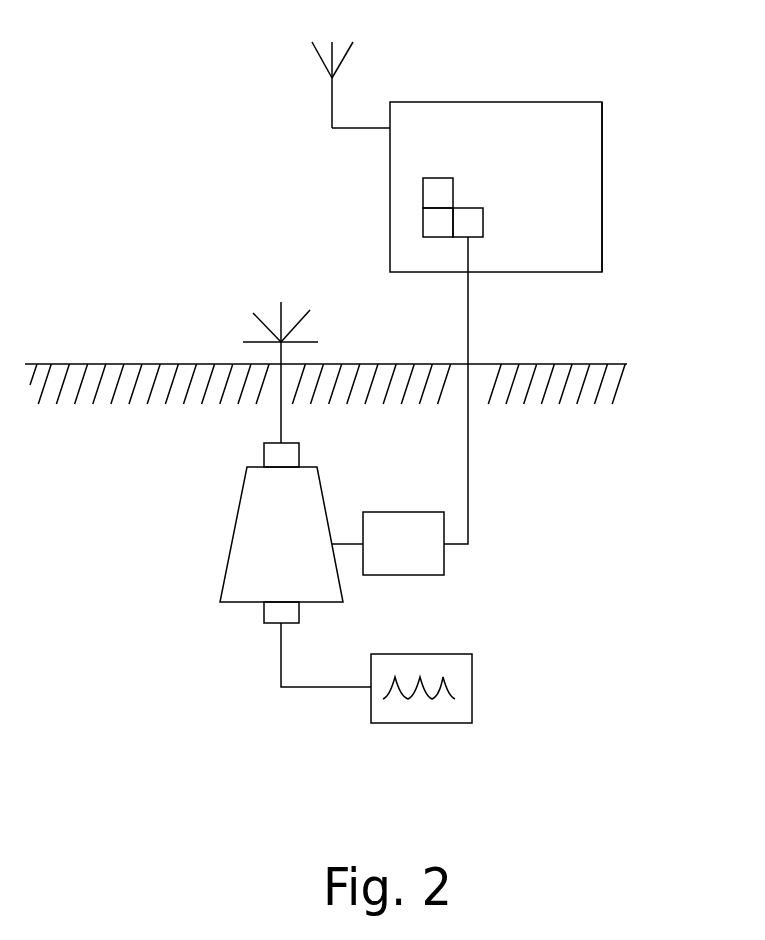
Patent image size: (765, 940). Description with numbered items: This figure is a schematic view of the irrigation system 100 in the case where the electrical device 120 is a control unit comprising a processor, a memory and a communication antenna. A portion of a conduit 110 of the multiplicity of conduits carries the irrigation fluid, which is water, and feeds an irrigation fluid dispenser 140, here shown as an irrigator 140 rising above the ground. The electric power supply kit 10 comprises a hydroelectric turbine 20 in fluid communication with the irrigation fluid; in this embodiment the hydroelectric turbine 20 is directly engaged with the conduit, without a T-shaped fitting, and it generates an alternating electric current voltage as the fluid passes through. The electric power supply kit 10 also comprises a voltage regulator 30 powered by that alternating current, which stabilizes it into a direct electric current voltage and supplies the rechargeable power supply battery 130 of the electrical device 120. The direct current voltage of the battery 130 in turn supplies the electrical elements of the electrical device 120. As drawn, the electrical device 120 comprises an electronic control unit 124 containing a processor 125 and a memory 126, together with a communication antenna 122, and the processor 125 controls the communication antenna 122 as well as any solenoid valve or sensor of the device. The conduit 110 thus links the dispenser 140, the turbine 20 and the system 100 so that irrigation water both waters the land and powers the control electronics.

The electric power supply kit 10 is at (365, 498).
The hydroelectric turbine 20 is at (312, 566).
The voltage regulator 30 is at (413, 544).
The irrigation system 100 is at (420, 703).
The conduit 110 is at (281, 415).
The electrical device 120 is at (505, 143).
The communication antenna 122 is at (322, 56).
The electronic control unit 124 is at (575, 160).
The processor 125 is at (434, 193).
The memory 126 is at (438, 223).
The rechargeable power supply battery 130 is at (468, 223).
The irrigation fluid dispenser 140 is at (278, 317).